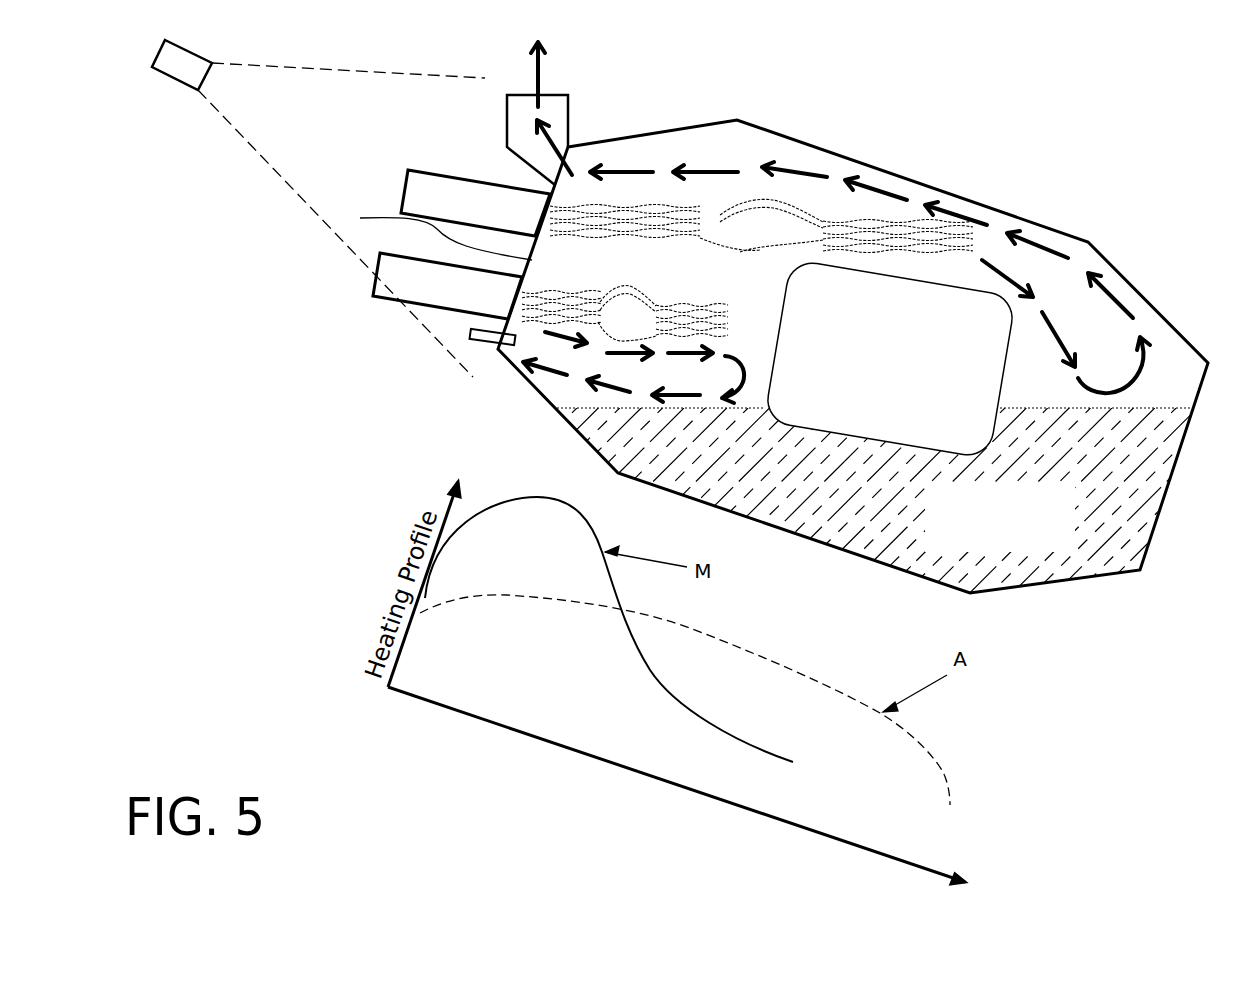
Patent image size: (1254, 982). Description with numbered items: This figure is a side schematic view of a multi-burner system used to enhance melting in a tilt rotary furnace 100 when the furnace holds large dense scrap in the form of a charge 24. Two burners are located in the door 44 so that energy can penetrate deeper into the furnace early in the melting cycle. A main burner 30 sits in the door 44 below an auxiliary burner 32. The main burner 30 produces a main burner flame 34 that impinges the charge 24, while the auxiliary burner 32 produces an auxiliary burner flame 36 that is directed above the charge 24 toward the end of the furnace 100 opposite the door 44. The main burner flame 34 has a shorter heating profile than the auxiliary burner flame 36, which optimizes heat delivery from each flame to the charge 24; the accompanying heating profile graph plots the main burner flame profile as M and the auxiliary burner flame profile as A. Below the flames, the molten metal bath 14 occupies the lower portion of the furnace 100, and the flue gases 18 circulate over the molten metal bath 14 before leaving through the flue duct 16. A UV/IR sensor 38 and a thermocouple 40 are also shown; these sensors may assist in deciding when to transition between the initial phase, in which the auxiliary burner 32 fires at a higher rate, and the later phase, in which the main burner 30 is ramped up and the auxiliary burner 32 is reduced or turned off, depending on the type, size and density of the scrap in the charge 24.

The tilt rotary furnace 100 is at (998, 152).
The molten metal bath 14 is at (977, 534).
The flue duct 16 is at (506, 127).
The flue gases 18 is at (542, 66).
The charge 24 is at (862, 371).
The main burner 30 is at (434, 298).
The auxiliary burner 32 is at (461, 218).
The main burner flame 34 is at (726, 313).
The auxiliary burner flame 36 is at (664, 240).
The UV/IR sensor 38 is at (190, 84).
The thermocouple 40 is at (470, 331).
The door 44 is at (428, 234).